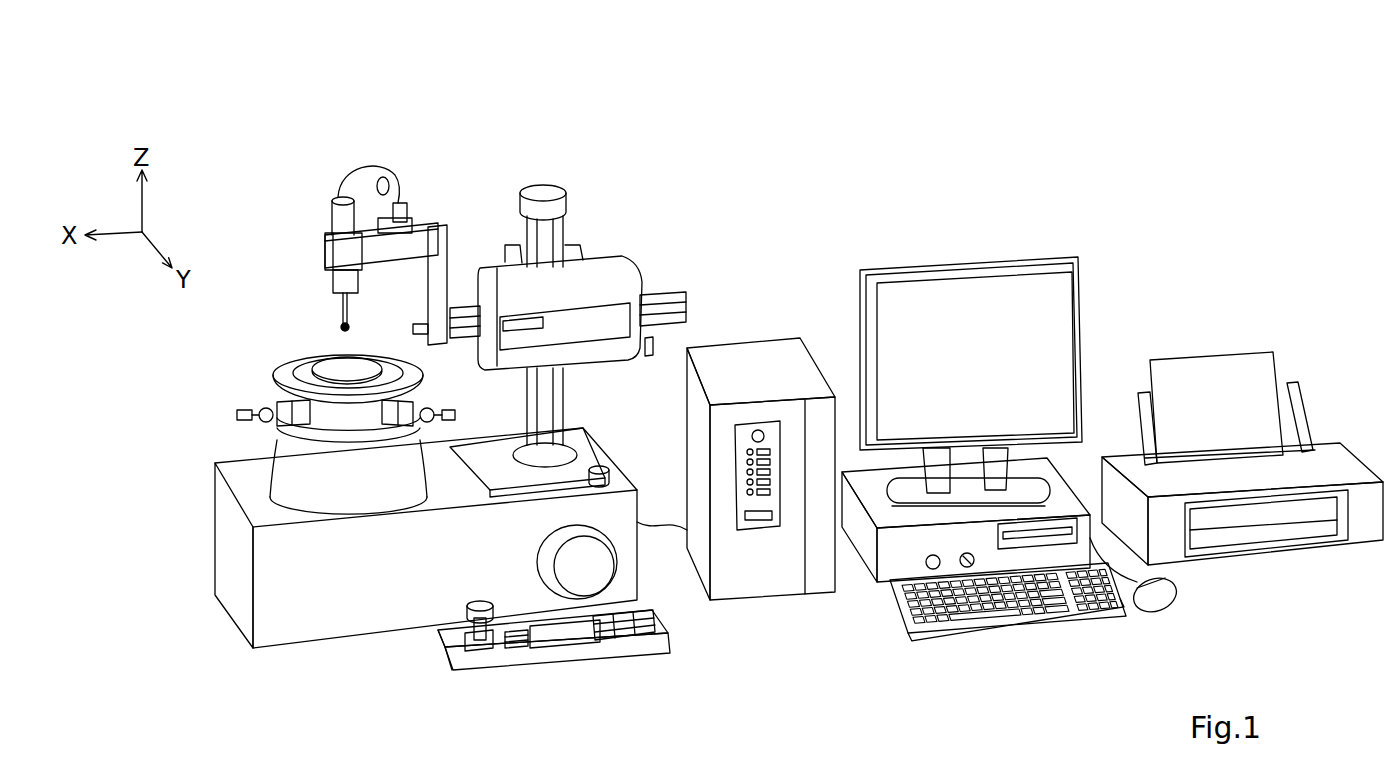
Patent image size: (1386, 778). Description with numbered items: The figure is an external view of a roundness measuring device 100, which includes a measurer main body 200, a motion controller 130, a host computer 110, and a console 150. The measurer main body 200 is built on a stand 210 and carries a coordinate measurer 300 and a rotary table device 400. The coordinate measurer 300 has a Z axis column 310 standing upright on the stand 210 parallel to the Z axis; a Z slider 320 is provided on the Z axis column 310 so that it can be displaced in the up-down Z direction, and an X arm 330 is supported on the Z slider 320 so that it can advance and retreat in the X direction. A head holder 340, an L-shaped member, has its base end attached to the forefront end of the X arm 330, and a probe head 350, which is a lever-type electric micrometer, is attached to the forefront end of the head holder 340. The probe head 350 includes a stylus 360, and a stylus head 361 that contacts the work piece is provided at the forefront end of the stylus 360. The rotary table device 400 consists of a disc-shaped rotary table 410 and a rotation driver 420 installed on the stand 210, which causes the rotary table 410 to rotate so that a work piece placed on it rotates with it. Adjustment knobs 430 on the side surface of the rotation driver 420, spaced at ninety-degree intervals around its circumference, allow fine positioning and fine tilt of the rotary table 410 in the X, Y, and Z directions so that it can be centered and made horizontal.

The roundness measuring device 100 is at (873, 100).
The host computer 110 is at (997, 230).
The motion controller 130 is at (770, 327).
The console 150 is at (573, 637).
The measurer main body 200 is at (632, 138).
The stand 210 is at (380, 592).
The coordinate measurer 300 is at (663, 257).
The Z axis column 310 is at (568, 203).
The Z slider 320 is at (605, 270).
The X arm 330 is at (455, 303).
The head holder 340 is at (437, 333).
The probe head 350 is at (330, 218).
The stylus 360 is at (338, 303).
The stylus head 361 is at (333, 325).
The rotary table device 400 is at (230, 373).
The rotary table 410 is at (300, 373).
The rotation driver 420 is at (287, 467).
The adjustment knobs 430 is at (267, 423).